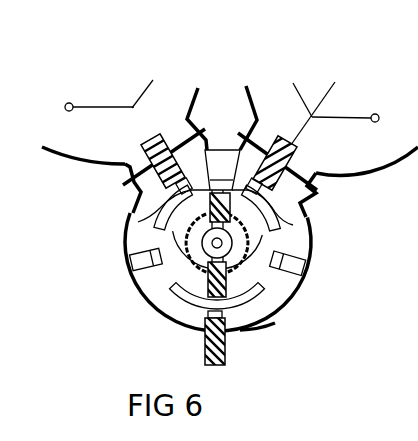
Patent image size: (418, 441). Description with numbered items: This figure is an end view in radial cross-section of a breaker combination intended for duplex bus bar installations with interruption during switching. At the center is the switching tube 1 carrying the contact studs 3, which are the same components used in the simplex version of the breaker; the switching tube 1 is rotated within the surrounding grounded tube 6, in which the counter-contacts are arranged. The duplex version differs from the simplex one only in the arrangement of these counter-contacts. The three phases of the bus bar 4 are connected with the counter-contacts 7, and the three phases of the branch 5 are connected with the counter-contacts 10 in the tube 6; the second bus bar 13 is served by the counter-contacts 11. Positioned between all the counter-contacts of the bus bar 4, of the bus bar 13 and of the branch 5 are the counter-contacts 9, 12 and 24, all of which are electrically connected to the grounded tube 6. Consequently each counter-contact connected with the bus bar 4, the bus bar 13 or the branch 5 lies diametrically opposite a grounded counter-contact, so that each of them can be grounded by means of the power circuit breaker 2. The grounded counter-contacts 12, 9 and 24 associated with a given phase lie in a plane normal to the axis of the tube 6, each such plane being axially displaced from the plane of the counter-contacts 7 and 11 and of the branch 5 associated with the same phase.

The switching tube 1 is at (138, 296).
The power circuit breaker 2 is at (228, 248).
The contact studs 3 is at (222, 178).
The bus bar 4 is at (172, 93).
The branch 5 is at (222, 353).
The tube 6 is at (263, 333).
The counter-contacts 7 is at (155, 222).
The counter-contacts 9 is at (305, 270).
The counter-contacts 10 is at (267, 292).
The counter-contacts 11 is at (272, 223).
The counter-contacts 12 is at (133, 262).
The bus bar 13 is at (376, 142).
The counter-contacts 24 is at (246, 174).